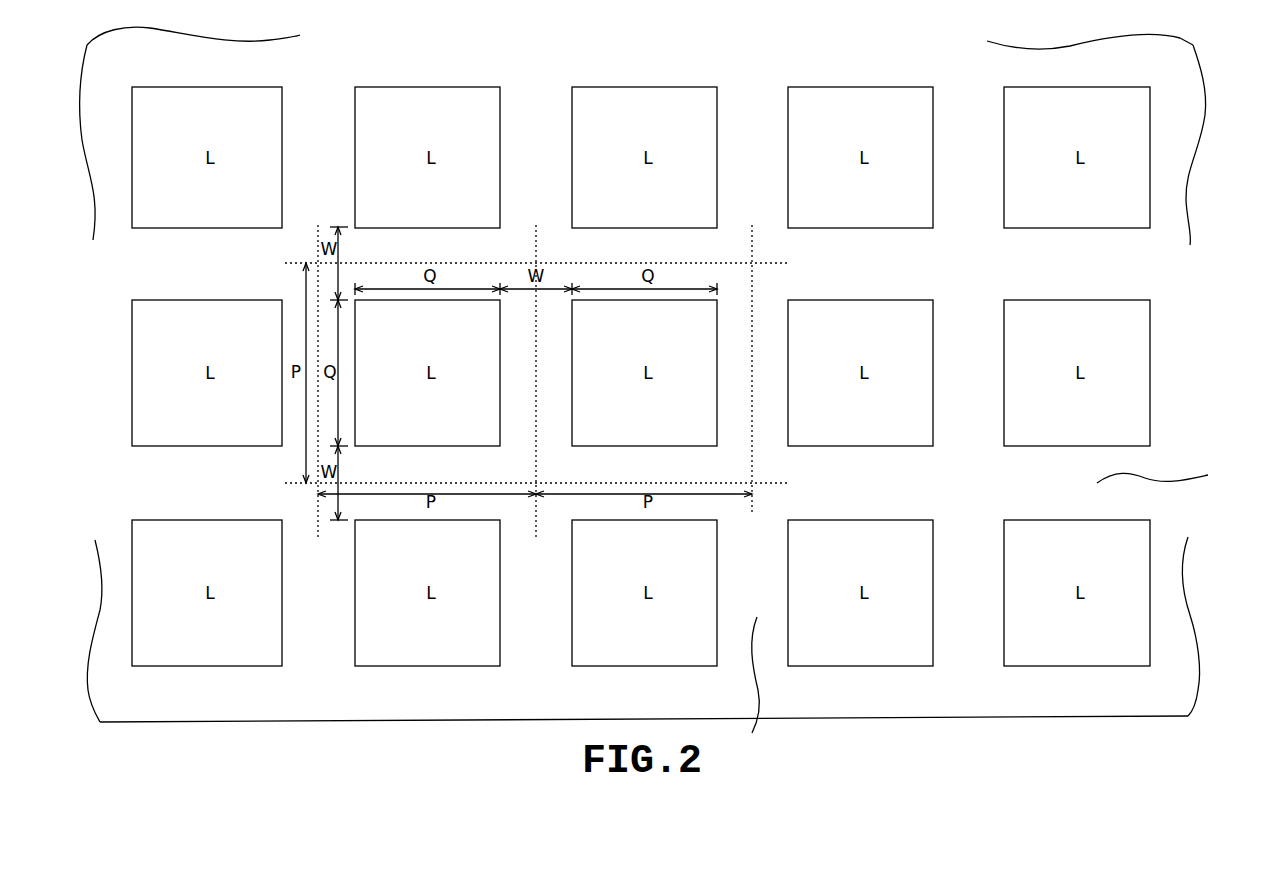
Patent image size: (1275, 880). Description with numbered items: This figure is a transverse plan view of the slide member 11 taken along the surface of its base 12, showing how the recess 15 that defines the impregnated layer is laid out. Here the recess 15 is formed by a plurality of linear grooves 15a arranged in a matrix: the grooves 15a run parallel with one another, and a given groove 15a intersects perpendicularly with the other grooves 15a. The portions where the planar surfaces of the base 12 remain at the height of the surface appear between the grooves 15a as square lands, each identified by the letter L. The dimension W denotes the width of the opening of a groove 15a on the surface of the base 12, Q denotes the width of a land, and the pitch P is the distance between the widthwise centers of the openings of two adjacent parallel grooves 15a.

The slide member 11 is at (1057, 718).
The base 12 is at (1170, 615).
The recess 15 is at (967, 698).
The linear groove 15a is at (995, 610).